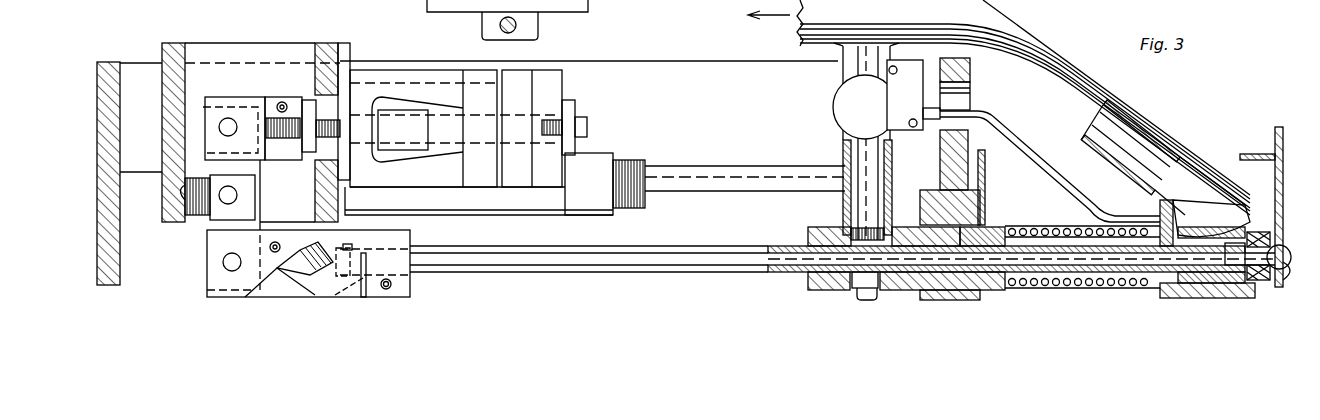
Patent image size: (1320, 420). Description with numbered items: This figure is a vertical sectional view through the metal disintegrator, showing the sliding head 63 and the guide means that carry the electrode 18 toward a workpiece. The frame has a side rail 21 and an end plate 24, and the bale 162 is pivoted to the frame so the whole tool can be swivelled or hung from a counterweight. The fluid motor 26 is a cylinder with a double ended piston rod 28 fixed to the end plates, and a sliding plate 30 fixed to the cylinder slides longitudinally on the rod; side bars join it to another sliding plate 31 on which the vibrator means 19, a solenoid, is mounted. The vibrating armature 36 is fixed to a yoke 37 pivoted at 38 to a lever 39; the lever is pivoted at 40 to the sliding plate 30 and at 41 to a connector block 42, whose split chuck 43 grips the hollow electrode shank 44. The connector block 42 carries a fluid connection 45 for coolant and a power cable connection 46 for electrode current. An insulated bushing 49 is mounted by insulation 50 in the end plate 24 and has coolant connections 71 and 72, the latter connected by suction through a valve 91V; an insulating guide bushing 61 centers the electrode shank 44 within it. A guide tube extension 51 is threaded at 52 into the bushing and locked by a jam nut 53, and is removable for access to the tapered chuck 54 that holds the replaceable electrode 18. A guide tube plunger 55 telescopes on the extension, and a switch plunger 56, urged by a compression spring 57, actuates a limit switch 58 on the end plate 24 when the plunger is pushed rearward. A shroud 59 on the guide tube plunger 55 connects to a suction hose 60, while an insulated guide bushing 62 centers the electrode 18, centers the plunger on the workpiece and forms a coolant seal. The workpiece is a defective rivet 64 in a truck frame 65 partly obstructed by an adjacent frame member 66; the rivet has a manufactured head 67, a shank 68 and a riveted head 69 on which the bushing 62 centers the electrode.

The electrode 18 is at (1148, 232).
The vibrator means 19 is at (440, 188).
The side rail 21 is at (682, 85).
The end plate 24 is at (965, 70).
The fluid motor 26 is at (598, 158).
The piston rod 28 is at (695, 194).
The sliding plate 30 is at (162, 84).
The sliding plate 31 is at (315, 62).
The vibrating armature 36 is at (366, 115).
The yoke 37 is at (210, 97).
The pivot 38 is at (229, 117).
The lever 39 is at (205, 222).
The pivot 40 is at (238, 195).
The pivot 41 is at (222, 262).
The connector block 42 is at (366, 230).
The split chuck 43 is at (394, 283).
The electrode shank 44 is at (624, 248).
The fluid connection 45 is at (292, 292).
The power cable connection 46 is at (281, 247).
The insulated bushing 49 is at (808, 230).
The insulation 50 is at (978, 168).
The guide tube extension 51 is at (1068, 224).
The threads 52 is at (992, 226).
The jam nut 53 is at (1015, 292).
The tapered chuck 54 is at (1028, 230).
The guide tube plunger 55 is at (1215, 215).
The switch plunger 56 is at (1040, 168).
The compression spring 57 is at (1082, 290).
The limit switch 58 is at (903, 130).
The shroud 59 is at (1185, 150).
The suction hose 60 is at (1045, 46).
The insulating guide bushing 61 is at (810, 280).
The insulated guide bushing 62 is at (1240, 227).
The sliding head 63 is at (490, 188).
The rivet 64 is at (1258, 283).
The truck frame 65 is at (1277, 127).
The frame member 66 is at (1255, 154).
The manufactured head 67 is at (1287, 278).
The shank 68 is at (1288, 245).
The riveted head 69 is at (1262, 232).
The coolant connection 71 is at (858, 296).
The coolant connection 72 is at (858, 232).
The valve 91V is at (833, 107).
The bale 162 is at (516, 25).